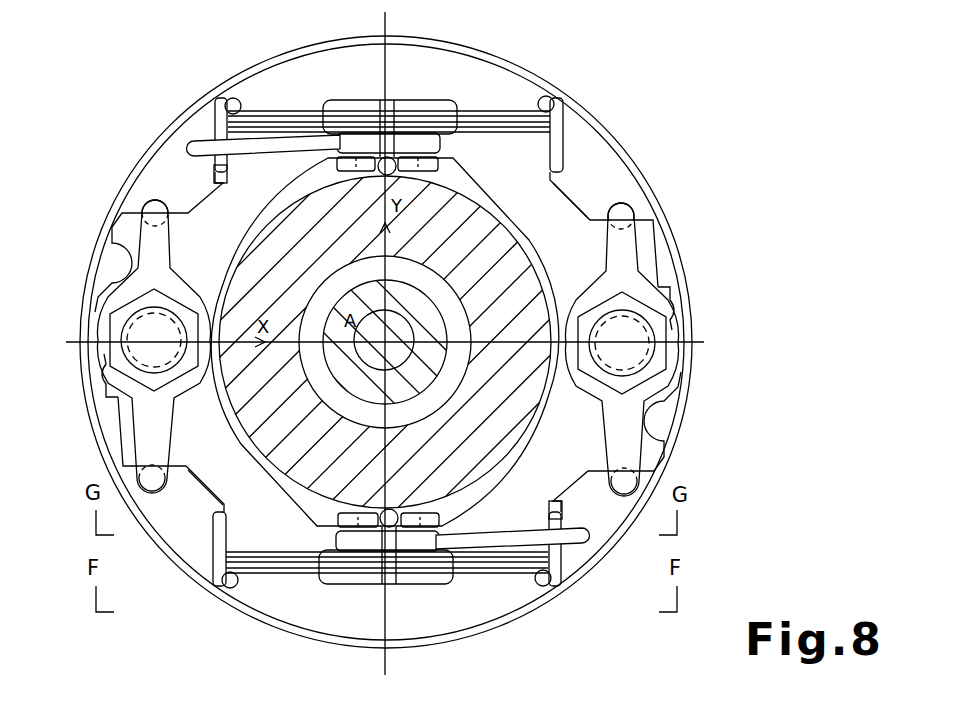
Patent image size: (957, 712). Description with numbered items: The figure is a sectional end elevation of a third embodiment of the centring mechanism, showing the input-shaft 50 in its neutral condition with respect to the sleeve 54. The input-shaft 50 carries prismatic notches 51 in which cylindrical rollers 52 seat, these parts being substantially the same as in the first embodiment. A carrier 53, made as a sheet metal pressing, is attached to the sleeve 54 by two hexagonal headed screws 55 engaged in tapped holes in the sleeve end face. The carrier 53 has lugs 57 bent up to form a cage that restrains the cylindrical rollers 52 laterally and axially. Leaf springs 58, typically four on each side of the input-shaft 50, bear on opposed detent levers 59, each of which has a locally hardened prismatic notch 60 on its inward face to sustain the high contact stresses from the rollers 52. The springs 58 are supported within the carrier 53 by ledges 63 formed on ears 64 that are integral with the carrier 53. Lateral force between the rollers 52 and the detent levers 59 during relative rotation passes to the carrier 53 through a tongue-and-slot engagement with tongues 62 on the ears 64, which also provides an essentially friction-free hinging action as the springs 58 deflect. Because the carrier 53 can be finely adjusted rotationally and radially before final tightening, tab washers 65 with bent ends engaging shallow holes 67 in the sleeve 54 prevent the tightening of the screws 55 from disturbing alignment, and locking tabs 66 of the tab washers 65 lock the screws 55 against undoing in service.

The input-shaft 50 is at (243, 407).
The prismatic notches 51 is at (447, 163).
The cylindrical rollers 52 is at (448, 101).
The carrier 53 is at (565, 213).
The sleeve 54 is at (590, 146).
The hexagonal headed screws 55 is at (132, 353).
The lugs 57 is at (344, 157).
The leaf springs 58 is at (298, 128).
The detent levers 59 is at (287, 147).
The prismatic notch 60 is at (380, 126).
The tongues 62 is at (216, 167).
The ledges 63 is at (232, 100).
The ears 64 is at (218, 130).
The tab washers 65 is at (130, 427).
The locking tabs 66 is at (658, 295).
The shallow holes 67 is at (146, 208).